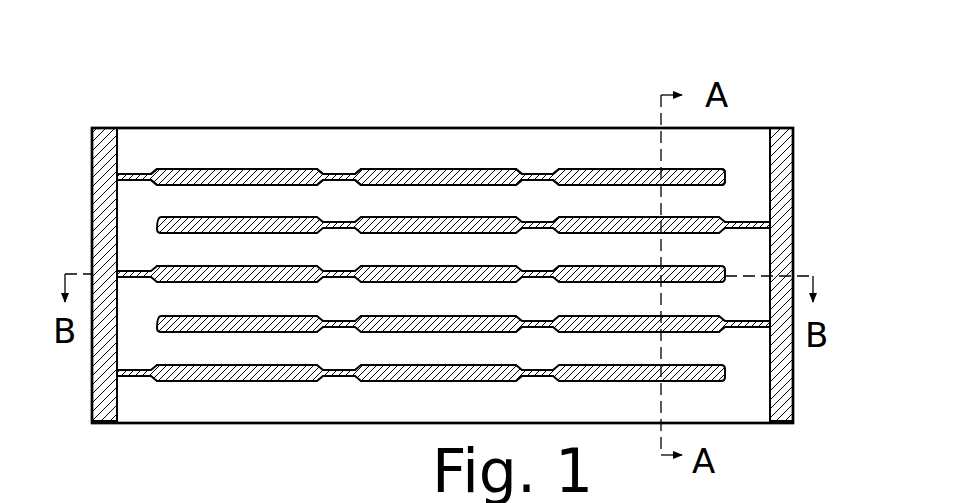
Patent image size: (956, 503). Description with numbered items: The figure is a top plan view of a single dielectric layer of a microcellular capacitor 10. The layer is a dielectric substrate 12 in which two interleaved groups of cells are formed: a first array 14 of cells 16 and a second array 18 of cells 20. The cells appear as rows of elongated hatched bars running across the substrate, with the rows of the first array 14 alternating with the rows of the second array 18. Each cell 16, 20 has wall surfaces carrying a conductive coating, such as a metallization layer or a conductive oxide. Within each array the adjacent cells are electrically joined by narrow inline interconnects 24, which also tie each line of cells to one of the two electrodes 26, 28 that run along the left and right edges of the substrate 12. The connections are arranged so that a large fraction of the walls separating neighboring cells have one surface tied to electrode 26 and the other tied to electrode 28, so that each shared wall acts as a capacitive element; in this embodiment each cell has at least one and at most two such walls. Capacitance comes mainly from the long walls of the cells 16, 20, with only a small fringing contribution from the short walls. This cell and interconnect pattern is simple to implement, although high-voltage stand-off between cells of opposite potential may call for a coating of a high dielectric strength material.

The microcellular capacitor 10 is at (266, 110).
The dielectric substrate 12 is at (358, 128).
The first array 14 is at (448, 158).
The cells 16 is at (463, 177).
The second array 18 is at (237, 208).
The cells 20 is at (423, 320).
The interconnects 24 is at (337, 173).
The electrode 26 is at (92, 393).
The electrode 28 is at (794, 383).